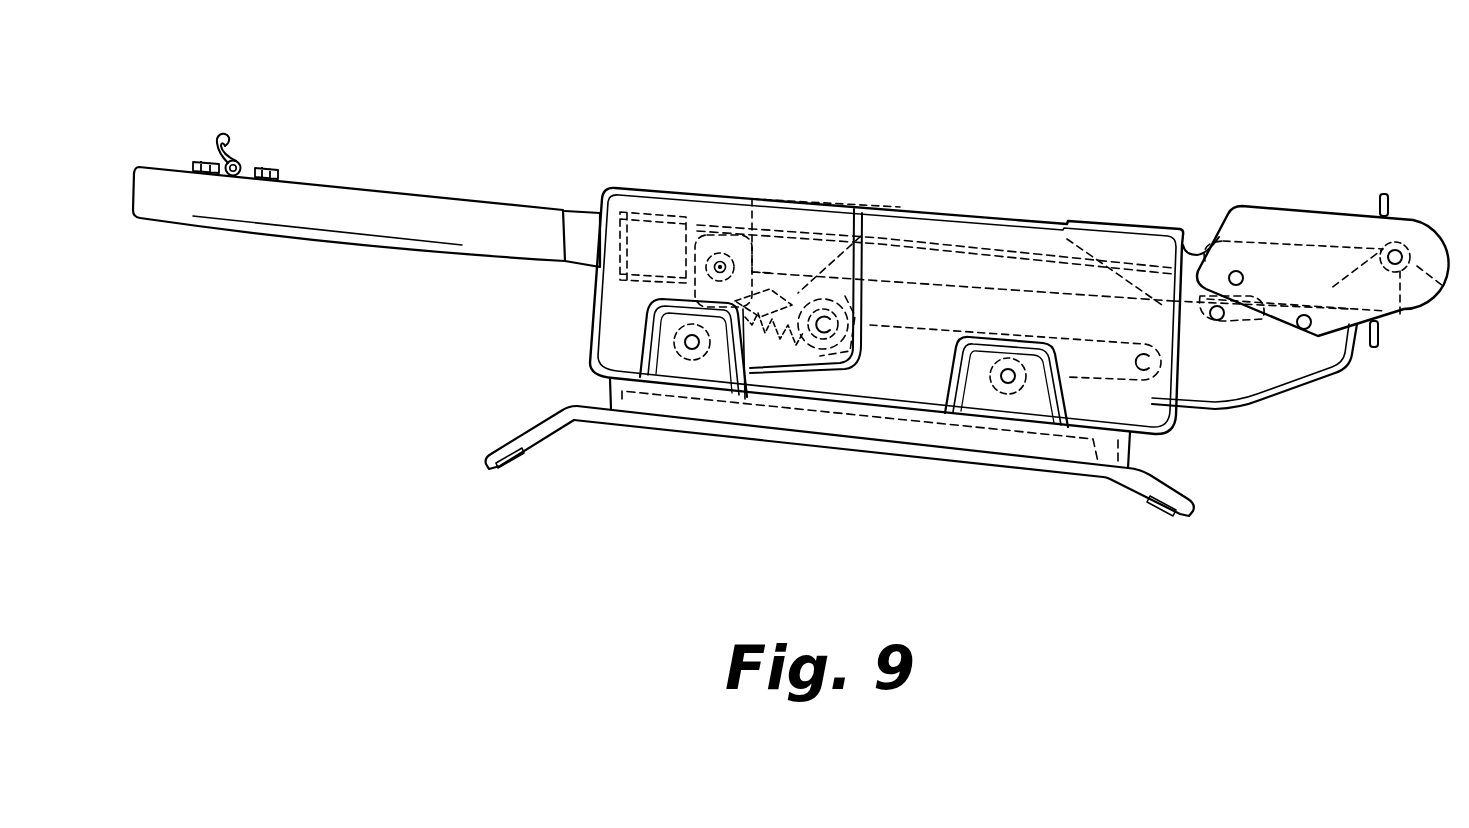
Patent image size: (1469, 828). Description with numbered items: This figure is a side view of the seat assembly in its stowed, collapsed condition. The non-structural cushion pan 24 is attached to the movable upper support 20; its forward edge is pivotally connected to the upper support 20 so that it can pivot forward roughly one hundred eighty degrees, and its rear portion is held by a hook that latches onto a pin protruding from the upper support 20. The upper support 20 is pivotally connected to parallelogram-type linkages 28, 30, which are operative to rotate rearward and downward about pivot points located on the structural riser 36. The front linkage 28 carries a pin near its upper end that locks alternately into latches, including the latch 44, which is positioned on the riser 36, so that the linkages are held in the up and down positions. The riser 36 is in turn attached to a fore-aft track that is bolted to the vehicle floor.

The upper support 20 is at (1248, 382).
The cushion pan 24 is at (383, 187).
The front linkage 28 is at (743, 400).
The linkage 30 is at (1080, 378).
The structural riser 36 is at (587, 314).
The latch 44 is at (859, 240).